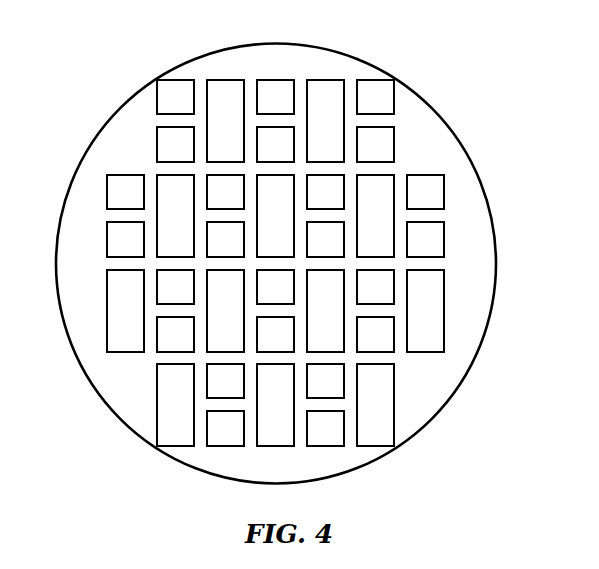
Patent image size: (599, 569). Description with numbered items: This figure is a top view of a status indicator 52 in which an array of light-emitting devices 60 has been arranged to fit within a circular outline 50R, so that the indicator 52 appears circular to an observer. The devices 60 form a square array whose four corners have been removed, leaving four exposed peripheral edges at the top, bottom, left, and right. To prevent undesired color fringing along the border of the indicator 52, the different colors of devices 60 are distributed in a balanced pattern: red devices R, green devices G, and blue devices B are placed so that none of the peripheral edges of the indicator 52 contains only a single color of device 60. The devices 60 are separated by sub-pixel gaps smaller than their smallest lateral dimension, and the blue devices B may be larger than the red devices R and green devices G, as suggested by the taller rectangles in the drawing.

The indicator 52 is at (440, 47).
The circular outline 50R is at (496, 262).
The light-emitting devices 60 is at (126, 192).
The red devices R is at (175, 98).
The green devices G is at (273, 143).
The blue devices B is at (223, 98).